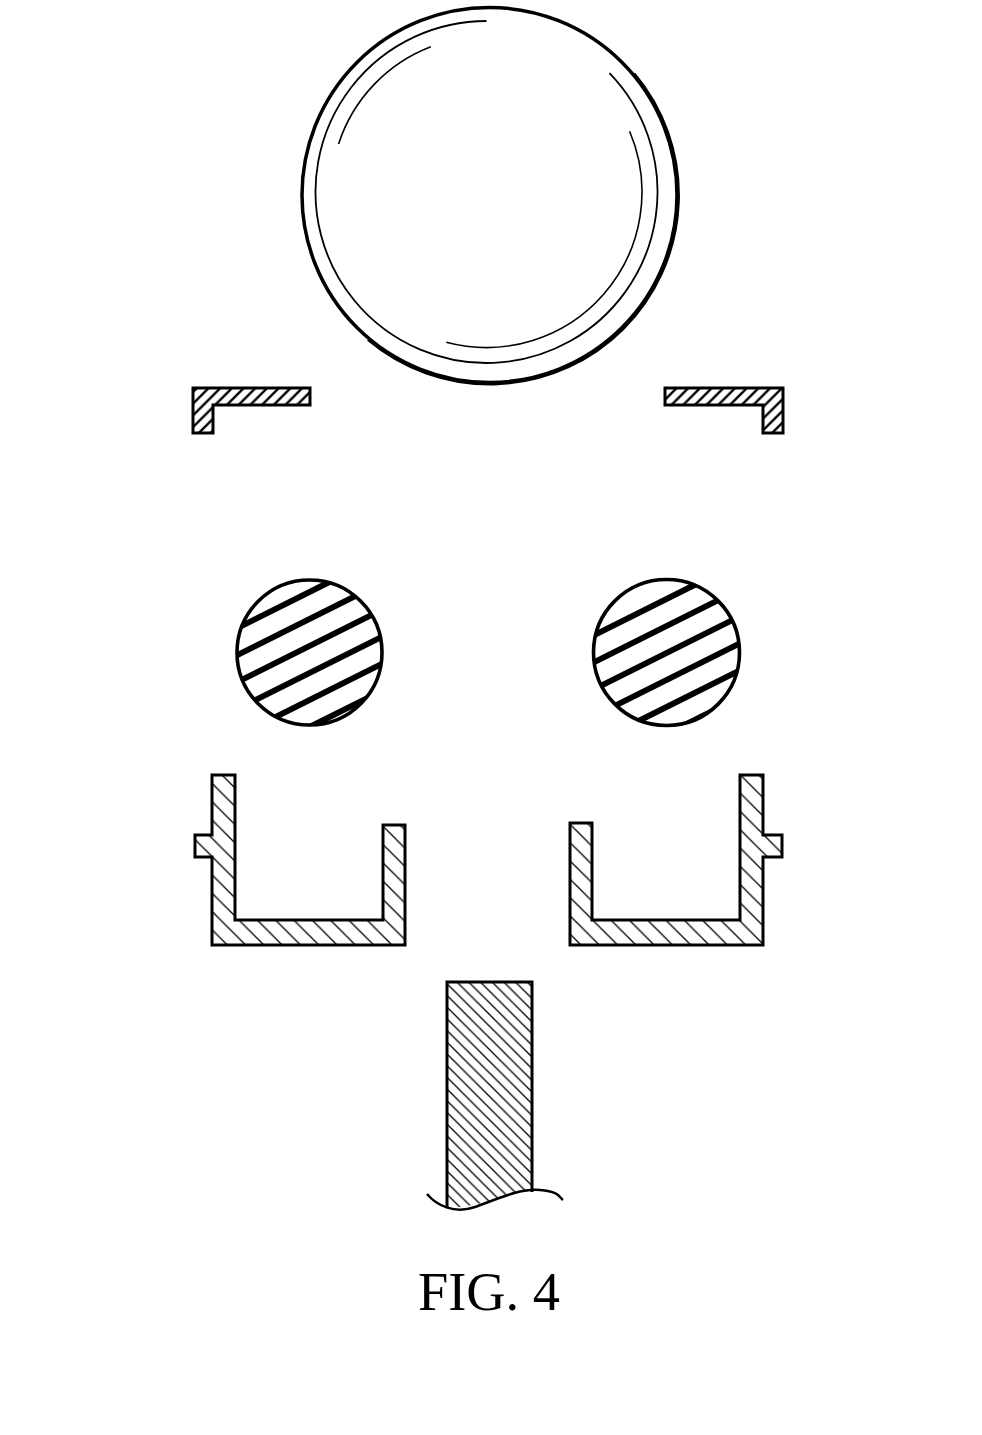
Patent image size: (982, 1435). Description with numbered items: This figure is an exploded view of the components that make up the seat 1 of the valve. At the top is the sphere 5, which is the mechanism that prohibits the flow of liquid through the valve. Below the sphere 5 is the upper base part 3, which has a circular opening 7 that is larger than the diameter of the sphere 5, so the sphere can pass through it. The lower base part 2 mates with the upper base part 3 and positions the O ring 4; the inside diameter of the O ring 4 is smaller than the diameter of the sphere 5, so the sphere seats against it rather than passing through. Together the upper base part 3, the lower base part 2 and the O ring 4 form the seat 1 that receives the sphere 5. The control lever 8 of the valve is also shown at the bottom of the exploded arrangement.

The seat 1 is at (752, 360).
The lower base part 2 is at (195, 885).
The upper base part 3 is at (176, 415).
The O ring 4 is at (220, 677).
The sphere 5 is at (284, 172).
The circular opening 7 is at (600, 395).
The control lever 8 is at (428, 1055).